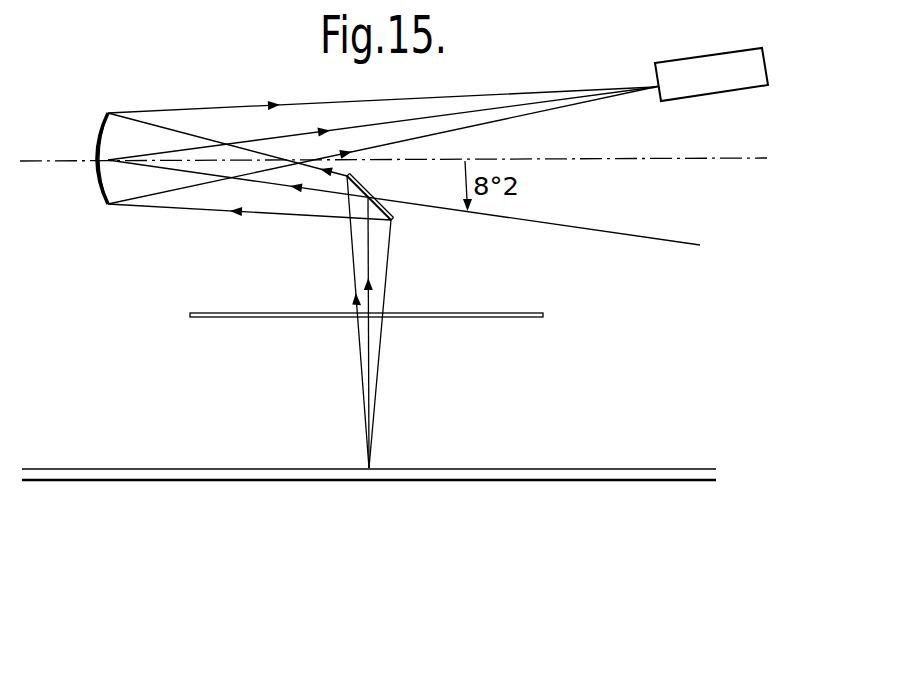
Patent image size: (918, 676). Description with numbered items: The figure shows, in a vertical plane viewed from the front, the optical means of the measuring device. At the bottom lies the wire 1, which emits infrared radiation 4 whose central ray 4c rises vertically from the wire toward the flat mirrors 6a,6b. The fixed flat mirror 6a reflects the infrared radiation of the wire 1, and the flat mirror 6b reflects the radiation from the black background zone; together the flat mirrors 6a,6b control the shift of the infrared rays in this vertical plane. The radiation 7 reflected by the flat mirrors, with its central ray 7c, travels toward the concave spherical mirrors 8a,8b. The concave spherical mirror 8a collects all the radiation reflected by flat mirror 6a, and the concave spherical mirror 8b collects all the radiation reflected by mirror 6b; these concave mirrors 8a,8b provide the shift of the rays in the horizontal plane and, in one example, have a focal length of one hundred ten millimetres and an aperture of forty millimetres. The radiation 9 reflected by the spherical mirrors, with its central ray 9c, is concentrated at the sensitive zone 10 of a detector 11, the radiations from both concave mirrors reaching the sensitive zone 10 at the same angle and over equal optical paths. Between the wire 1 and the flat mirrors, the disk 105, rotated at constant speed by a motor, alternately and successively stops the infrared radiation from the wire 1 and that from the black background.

The wire 1 is at (513, 469).
The infrared radiation 4 is at (391, 322).
The central ray 4c is at (368, 274).
The flat mirrors 6a,6b is at (393, 196).
The flat mirror 6a is at (393, 196).
The flat mirror 6b is at (358, 186).
The radiation reflected by the flat mirrors 7 is at (404, 184).
The central ray 7c is at (258, 182).
The concave spherical mirrors 8a,8b is at (66, 157).
The concave spherical mirror 8a is at (66, 157).
The concave spherical mirror 8b is at (100, 142).
The radiation reflected by the spherical mirrors 9 is at (381, 126).
The central ray 9c is at (462, 112).
The sensitive zone 10 is at (654, 89).
The detector 11 is at (722, 67).
The disk 105 is at (518, 311).